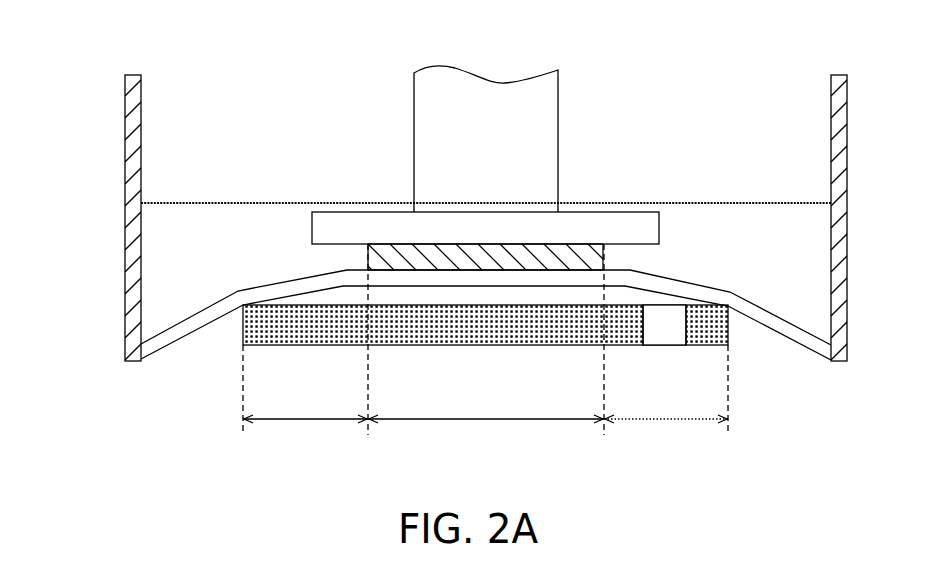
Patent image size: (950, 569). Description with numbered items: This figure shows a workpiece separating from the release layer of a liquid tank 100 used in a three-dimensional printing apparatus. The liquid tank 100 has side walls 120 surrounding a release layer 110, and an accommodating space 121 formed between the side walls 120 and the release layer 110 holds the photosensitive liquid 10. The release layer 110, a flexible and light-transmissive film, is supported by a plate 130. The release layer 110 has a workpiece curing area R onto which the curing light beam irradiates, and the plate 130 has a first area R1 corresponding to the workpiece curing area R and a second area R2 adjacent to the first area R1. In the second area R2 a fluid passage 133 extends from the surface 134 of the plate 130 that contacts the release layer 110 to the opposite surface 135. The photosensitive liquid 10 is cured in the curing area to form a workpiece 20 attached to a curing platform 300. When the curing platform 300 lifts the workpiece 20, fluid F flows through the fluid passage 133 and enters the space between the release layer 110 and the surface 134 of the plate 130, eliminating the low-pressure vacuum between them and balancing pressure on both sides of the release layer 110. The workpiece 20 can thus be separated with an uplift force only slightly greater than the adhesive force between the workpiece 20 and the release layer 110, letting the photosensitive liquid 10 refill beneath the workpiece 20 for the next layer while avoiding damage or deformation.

The liquid tank 100 is at (58, 142).
The release layer 110 is at (177, 330).
The side walls 120 is at (127, 162).
The accommodating space 121 is at (753, 148).
The plate 130 is at (244, 313).
The fluid passage 133 is at (655, 342).
The surface of the plate 134 is at (531, 300).
The surface opposite to the surface 135 is at (558, 346).
The photosensitive liquid 10 is at (200, 220).
The workpiece 20 is at (385, 255).
The curing platform 300 is at (623, 222).
The workpiece curing area R is at (520, 282).
The fluid F is at (643, 296).
The first area R1 is at (483, 440).
The second area R2 is at (485, 437).